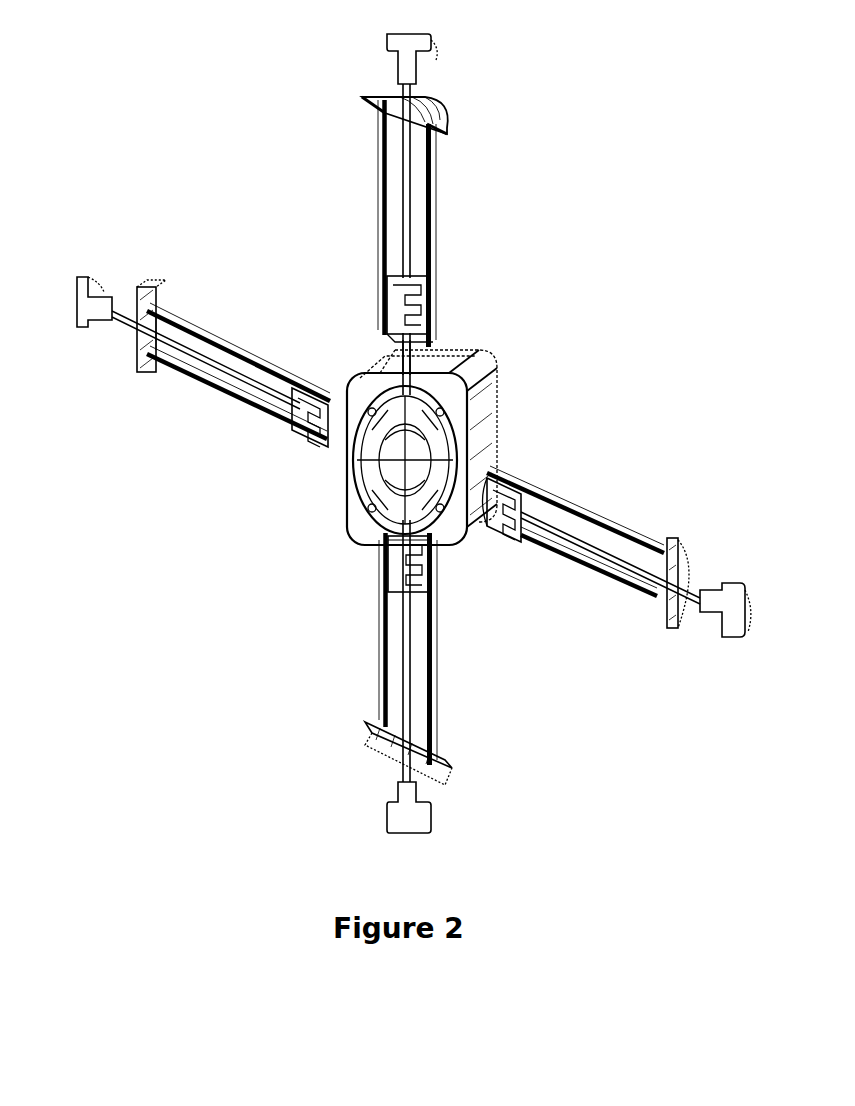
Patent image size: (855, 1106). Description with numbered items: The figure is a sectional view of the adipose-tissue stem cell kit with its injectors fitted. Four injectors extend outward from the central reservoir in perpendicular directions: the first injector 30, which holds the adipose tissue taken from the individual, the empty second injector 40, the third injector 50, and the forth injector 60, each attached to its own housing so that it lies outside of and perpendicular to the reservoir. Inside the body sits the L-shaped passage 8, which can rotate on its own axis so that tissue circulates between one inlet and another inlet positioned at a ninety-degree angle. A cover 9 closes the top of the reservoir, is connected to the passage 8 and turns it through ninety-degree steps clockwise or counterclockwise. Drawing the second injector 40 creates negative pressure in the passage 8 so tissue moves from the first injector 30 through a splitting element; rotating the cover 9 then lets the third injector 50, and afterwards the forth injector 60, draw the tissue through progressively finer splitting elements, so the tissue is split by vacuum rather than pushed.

The passage 8 is at (507, 453).
The cover 9 is at (474, 438).
The first injector 30 is at (474, 204).
The second injector 40 is at (203, 332).
The third injector 50 is at (473, 683).
The forth injector 60 is at (617, 532).